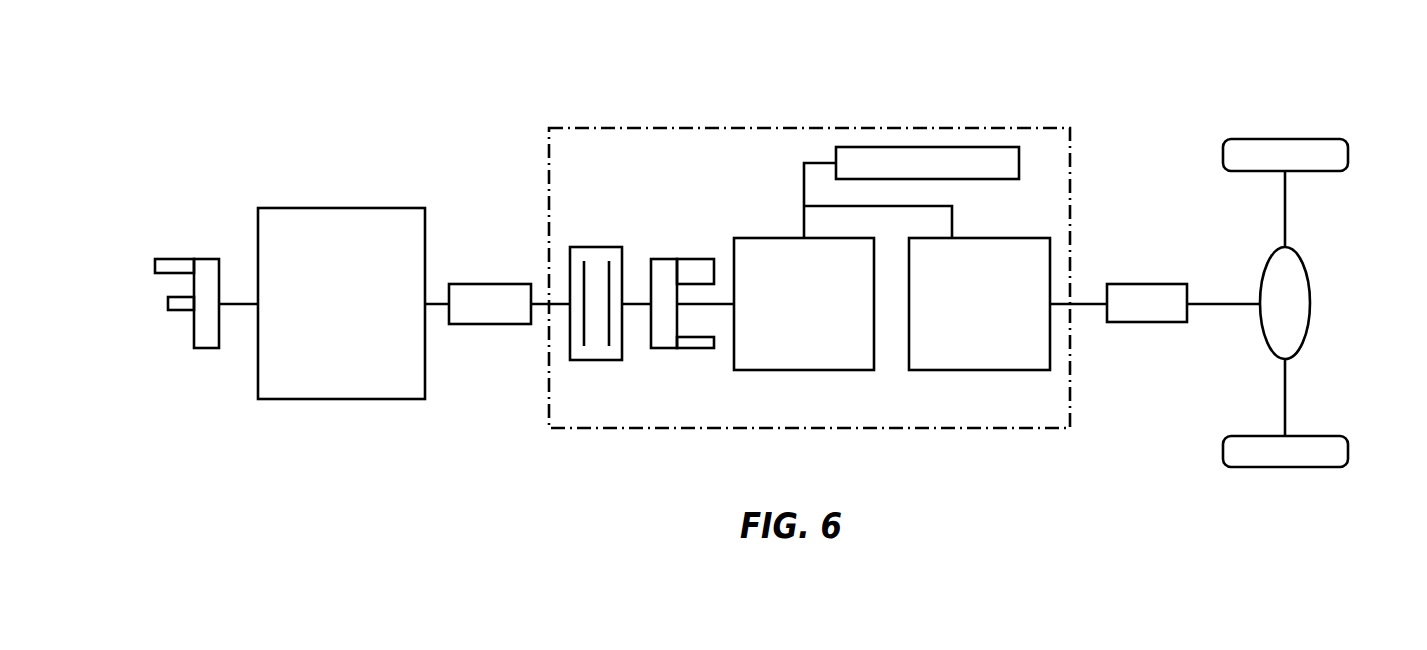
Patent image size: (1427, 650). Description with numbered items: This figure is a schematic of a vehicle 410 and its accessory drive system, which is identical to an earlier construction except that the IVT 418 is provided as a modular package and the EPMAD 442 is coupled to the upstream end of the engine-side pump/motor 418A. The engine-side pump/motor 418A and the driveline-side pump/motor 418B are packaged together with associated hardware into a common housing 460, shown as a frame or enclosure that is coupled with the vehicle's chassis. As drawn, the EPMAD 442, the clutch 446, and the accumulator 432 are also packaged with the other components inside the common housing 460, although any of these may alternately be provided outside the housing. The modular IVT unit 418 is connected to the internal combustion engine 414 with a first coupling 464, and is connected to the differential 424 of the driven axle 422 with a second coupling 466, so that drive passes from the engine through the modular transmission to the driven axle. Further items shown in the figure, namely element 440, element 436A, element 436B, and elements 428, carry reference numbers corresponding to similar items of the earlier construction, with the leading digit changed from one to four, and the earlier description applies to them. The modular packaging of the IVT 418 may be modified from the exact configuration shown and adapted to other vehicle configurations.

The vehicle 410 is at (294, 157).
The internal combustion engine 414 is at (314, 383).
The starter motor/generator 440 is at (195, 372).
The electrical connector 436A is at (155, 268).
The first coupling 464 is at (487, 290).
The IVT 418 is at (614, 100).
The common housing 460 is at (820, 126).
The clutch 446 is at (597, 255).
The EPMAD 442 is at (645, 232).
The electrical connector 436B is at (716, 340).
The engine-side pump/motor 418A is at (776, 246).
The driveline-side pump/motor 418B is at (1003, 246).
The accumulator 432 is at (930, 156).
The second coupling 466 is at (1148, 293).
The differential 424 is at (1295, 280).
The driven axle 422 is at (1287, 209).
The wheel 428 is at (1337, 157).